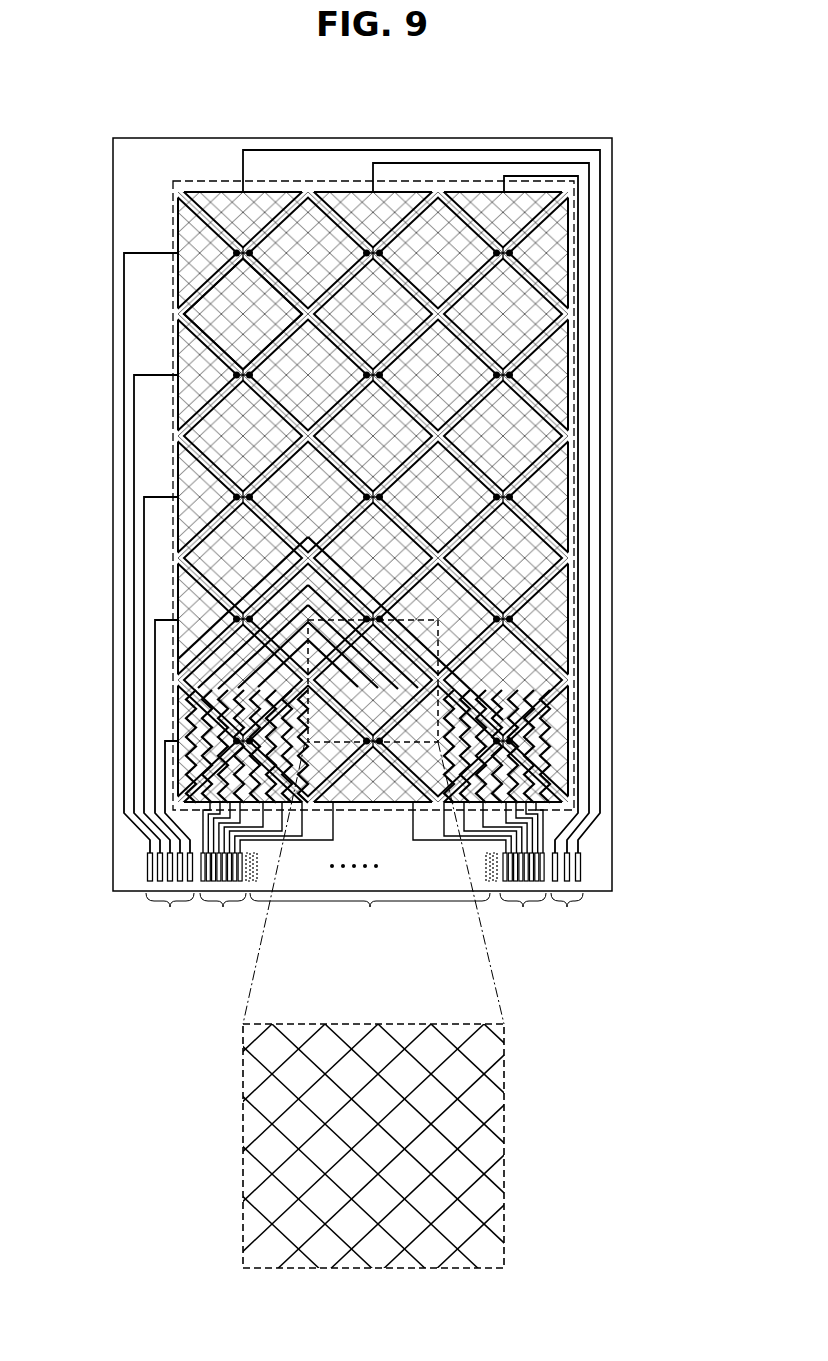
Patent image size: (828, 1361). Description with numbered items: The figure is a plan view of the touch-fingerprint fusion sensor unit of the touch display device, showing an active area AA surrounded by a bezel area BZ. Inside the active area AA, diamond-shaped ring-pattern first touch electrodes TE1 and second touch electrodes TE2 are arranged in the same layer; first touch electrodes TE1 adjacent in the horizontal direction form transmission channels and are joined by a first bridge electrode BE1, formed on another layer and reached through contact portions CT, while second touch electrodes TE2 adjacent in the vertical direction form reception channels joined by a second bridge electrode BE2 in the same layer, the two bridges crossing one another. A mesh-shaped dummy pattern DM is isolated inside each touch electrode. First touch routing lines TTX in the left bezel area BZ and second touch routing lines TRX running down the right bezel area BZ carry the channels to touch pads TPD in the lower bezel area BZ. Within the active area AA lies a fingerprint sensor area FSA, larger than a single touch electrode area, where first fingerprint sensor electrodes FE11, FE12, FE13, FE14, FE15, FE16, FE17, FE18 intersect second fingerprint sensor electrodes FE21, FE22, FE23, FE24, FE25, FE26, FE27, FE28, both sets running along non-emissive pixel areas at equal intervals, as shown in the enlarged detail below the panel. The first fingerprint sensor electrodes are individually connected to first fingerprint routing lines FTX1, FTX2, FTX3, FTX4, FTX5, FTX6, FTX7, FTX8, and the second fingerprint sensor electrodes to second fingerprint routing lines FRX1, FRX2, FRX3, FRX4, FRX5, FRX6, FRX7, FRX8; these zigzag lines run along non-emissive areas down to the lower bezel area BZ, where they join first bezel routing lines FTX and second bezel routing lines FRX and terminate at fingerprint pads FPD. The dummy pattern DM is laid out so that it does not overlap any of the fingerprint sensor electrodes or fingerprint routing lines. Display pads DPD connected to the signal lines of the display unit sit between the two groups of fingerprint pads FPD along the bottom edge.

The bezel area BZ is at (122, 176).
The active area AA is at (450, 181).
The first touch electrode TE1 is at (178, 220).
The second touch electrode TE2 is at (197, 192).
The first bridge electrode BE1 is at (378, 240).
The second bridge electrode BE2 is at (252, 240).
The dummy pattern DM is at (207, 318).
The contact portion CT is at (237, 375).
The fingerprint sensor area FSA is at (373, 612).
The first fingerprint routing line FTX1 is at (250, 576).
The first fingerprint routing line FTX2 is at (250, 642).
The first fingerprint routing line FTX3 is at (245, 666).
The first fingerprint routing line FTX4 is at (245, 690).
The first fingerprint routing line FTX5 is at (245, 716).
The first fingerprint routing line FTX6 is at (240, 756).
The first fingerprint routing line FTX7 is at (398, 806).
The first fingerprint routing line FTX8 is at (240, 788).
The second fingerprint routing line FRX1 is at (490, 576).
The second fingerprint routing line FRX2 is at (490, 643).
The second fingerprint routing line FRX3 is at (495, 668).
The second fingerprint routing line FRX4 is at (495, 692).
The second fingerprint routing line FRX5 is at (495, 718).
The second fingerprint routing line FRX6 is at (500, 756).
The second fingerprint routing line FRX7 is at (377, 860).
The second fingerprint routing line FRX8 is at (505, 788).
The first bezel routing line FTX is at (190, 841).
The second bezel routing line FRX is at (556, 843).
The first touch routing line TTX is at (128, 830).
The second touch routing line TRX is at (606, 825).
The touch pad TPD is at (368, 908).
The fingerprint pad FPD is at (373, 888).
The display pad DPD is at (370, 908).
The first fingerprint sensor electrode FE11 is at (486, 1070).
The first fingerprint sensor electrode FE12 is at (480, 1108).
The first fingerprint sensor electrode FE13 is at (475, 1162).
The first fingerprint sensor electrode FE14 is at (475, 1210).
The first fingerprint sensor electrode FE15 is at (465, 1256).
The first fingerprint sensor electrode FE16 is at (407, 1268).
The first fingerprint sensor electrode FE17 is at (352, 1268).
The first fingerprint sensor electrode FE18 is at (298, 1268).
The second fingerprint sensor electrode FE21 is at (258, 1070).
The second fingerprint sensor electrode FE22 is at (262, 1108).
The second fingerprint sensor electrode FE23 is at (283, 1157).
The second fingerprint sensor electrode FE24 is at (283, 1207).
The second fingerprint sensor electrode FE25 is at (280, 1257).
The second fingerprint sensor electrode FE26 is at (390, 1203).
The second fingerprint sensor electrode FE27 is at (413, 1232).
The second fingerprint sensor electrode FE28 is at (463, 1268).